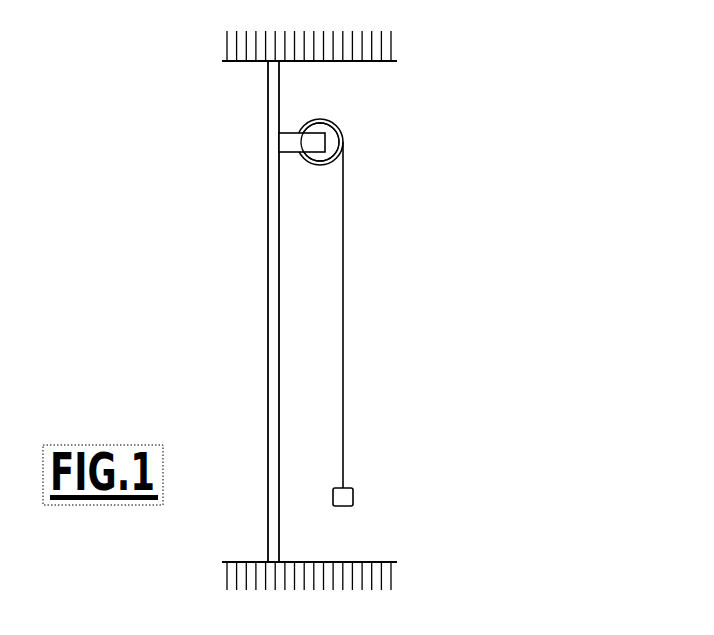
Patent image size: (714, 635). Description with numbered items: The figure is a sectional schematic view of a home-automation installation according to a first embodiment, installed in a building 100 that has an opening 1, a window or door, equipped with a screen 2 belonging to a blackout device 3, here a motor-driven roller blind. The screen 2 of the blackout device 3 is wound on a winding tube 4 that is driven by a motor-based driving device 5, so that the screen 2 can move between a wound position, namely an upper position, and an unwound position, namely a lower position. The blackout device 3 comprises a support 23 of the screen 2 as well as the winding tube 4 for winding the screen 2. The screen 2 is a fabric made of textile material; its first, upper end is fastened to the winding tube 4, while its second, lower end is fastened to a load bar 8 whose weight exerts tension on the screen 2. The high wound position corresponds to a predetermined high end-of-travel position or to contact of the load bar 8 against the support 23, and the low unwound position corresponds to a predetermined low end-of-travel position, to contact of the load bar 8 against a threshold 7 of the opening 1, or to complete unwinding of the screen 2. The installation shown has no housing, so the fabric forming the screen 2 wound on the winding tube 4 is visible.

The building 100 is at (377, 45).
The opening 1 is at (232, 332).
The threshold 7 is at (245, 535).
The motor-based driving device 5 is at (330, 137).
The support 23 is at (287, 143).
The winding tube 4 is at (322, 165).
The screen 2 is at (343, 231).
The blackout device 3 is at (402, 375).
The load bar 8 is at (345, 497).